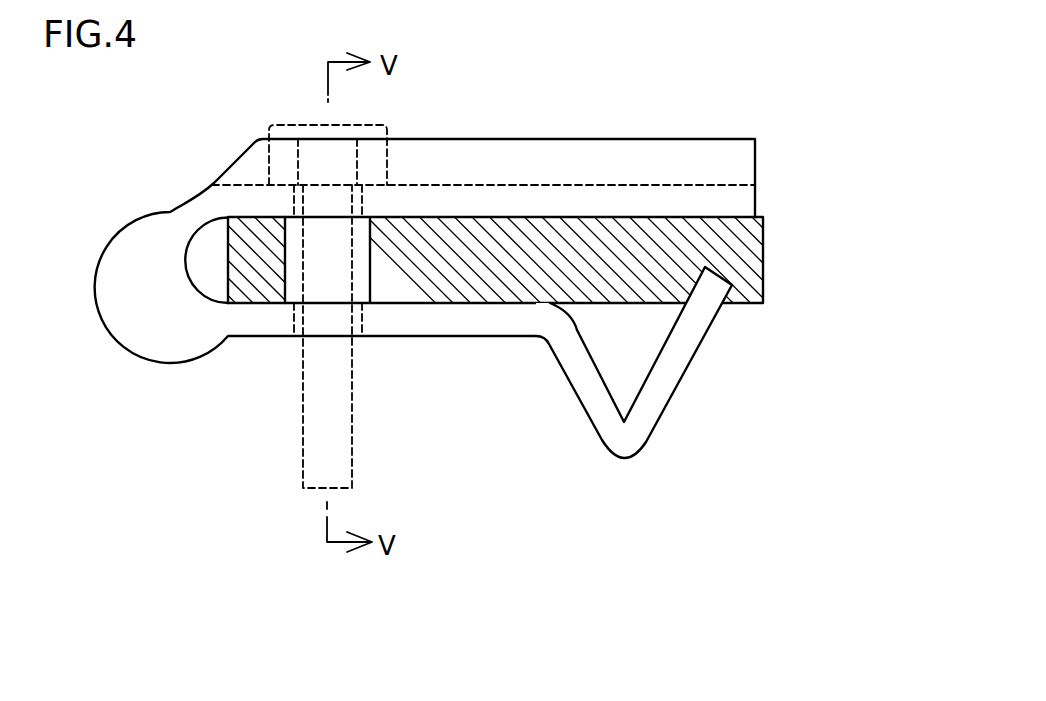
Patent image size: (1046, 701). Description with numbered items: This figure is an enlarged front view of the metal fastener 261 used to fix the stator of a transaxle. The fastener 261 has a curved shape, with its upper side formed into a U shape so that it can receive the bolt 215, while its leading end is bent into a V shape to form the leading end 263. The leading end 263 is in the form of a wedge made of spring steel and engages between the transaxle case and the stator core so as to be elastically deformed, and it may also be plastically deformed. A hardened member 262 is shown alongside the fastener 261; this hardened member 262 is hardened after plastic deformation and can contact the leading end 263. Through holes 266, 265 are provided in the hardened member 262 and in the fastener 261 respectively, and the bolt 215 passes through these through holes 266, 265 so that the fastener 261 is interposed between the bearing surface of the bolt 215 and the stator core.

The bolt 215 is at (283, 122).
The fastener 261 is at (733, 159).
The hardened member 262 is at (742, 248).
The leading end 263 is at (625, 432).
The through hole 265 is at (296, 201).
The through hole 266 is at (286, 267).